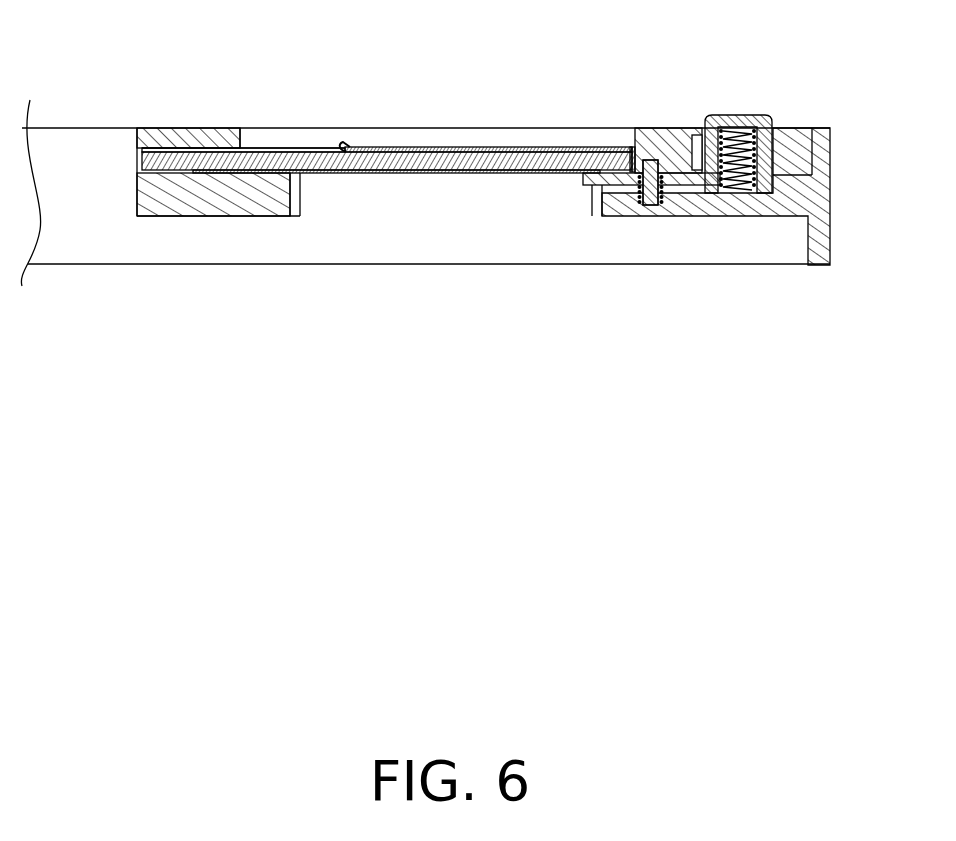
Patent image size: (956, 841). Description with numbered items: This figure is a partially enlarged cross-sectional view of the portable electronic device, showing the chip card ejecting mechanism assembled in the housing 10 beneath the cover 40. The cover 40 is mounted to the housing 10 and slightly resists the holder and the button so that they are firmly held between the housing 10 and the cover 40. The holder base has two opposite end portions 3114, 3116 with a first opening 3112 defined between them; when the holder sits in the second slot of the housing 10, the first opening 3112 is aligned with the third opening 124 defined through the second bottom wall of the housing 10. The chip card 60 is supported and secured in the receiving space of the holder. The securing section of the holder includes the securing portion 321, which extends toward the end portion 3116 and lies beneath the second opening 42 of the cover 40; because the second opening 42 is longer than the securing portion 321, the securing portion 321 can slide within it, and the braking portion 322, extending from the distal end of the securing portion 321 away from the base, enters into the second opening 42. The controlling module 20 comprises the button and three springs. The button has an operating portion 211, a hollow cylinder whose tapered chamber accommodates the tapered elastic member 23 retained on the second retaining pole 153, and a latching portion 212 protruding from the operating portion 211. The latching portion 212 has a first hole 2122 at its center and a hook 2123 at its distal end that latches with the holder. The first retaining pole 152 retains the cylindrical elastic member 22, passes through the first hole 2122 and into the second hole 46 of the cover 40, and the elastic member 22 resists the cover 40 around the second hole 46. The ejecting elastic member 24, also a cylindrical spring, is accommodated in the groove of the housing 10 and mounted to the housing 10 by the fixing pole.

The housing 10 is at (815, 197).
The controlling module 20 is at (785, 172).
The elastic member 22 is at (675, 165).
The elastic member 23 is at (765, 158).
The elastic member 24 is at (636, 165).
The cover 40 is at (143, 133).
The second opening 42 is at (262, 135).
The second hole 46 is at (647, 150).
The chip card 60 is at (366, 148).
The third opening 124 is at (315, 200).
The first retaining pole 152 is at (648, 197).
The second retaining pole 153 is at (738, 180).
The operating portion 211 is at (745, 116).
The latching portion 212 is at (692, 183).
The first hole 2122 is at (633, 192).
The hook 2123 is at (582, 184).
The securing portion 321 is at (421, 152).
The braking portion 322 is at (344, 142).
The first opening 3112 is at (418, 172).
The end portion 3114 is at (628, 150).
The end portion 3116 is at (187, 140).